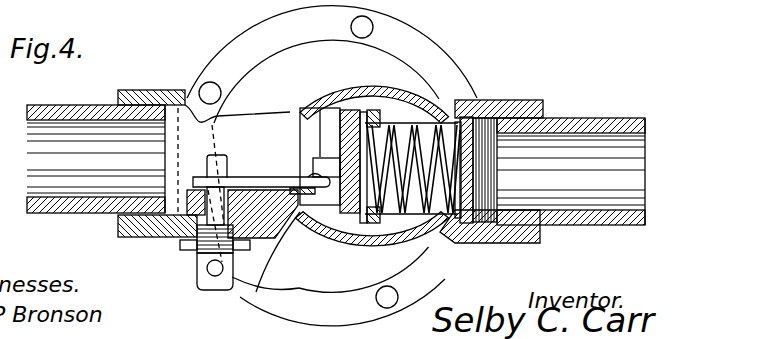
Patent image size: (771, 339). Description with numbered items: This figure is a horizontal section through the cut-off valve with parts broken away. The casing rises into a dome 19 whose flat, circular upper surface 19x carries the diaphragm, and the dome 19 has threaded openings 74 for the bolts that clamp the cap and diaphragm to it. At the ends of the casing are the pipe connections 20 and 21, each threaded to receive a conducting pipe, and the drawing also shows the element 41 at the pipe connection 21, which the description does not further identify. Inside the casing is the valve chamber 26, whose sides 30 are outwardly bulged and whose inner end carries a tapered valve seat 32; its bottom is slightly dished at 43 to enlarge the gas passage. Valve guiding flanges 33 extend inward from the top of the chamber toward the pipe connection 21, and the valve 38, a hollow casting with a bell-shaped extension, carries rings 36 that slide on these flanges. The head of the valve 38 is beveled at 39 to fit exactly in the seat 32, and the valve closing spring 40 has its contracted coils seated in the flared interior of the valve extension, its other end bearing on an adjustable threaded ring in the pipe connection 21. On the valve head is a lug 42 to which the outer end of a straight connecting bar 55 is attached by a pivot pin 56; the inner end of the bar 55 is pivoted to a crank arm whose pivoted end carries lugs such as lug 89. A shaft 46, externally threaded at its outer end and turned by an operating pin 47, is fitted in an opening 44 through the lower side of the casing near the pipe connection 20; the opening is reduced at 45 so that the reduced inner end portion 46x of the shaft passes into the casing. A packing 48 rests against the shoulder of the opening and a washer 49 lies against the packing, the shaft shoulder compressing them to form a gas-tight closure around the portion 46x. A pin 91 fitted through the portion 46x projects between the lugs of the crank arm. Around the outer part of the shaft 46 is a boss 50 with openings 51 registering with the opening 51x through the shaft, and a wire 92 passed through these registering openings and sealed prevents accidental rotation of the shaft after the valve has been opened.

The dome 19 is at (452, 73).
The upper surface of the dome 19x is at (420, 60).
The pipe connection 20 is at (142, 93).
The pipe connection 21 is at (522, 100).
The valve chamber 26 is at (333, 117).
The sides of the valve chamber 30 is at (357, 94).
The tapered valve seat 32 is at (312, 133).
The valve guiding flanges 33 is at (310, 170).
The rings 36 is at (385, 100).
The valve 38 is at (348, 117).
The beveled outer surface of the valve head 39 is at (345, 216).
The valve closing spring 40 is at (468, 100).
The collar 41 is at (478, 245).
The lug 42 is at (327, 170).
The dished bottom of the valve chamber 43 is at (341, 5).
The opening 44 is at (197, 255).
The reduced inner end of the opening 45 is at (180, 195).
The shaft 46 is at (212, 291).
The projecting inner end portion of the shaft 46x is at (180, 203).
The operating pin 47 is at (217, 277).
The packing 48 is at (180, 235).
The washer 49 is at (187, 240).
The boss 50 is at (215, 245).
The openings 51 is at (193, 233).
The opening 51x is at (271, 204).
The connecting bar 55 is at (235, 179).
The pivot pin 56 is at (327, 211).
The threaded openings 74 is at (373, 26).
The lug 89 is at (226, 156).
The pin 91 is at (225, 177).
The wire 92 is at (199, 262).